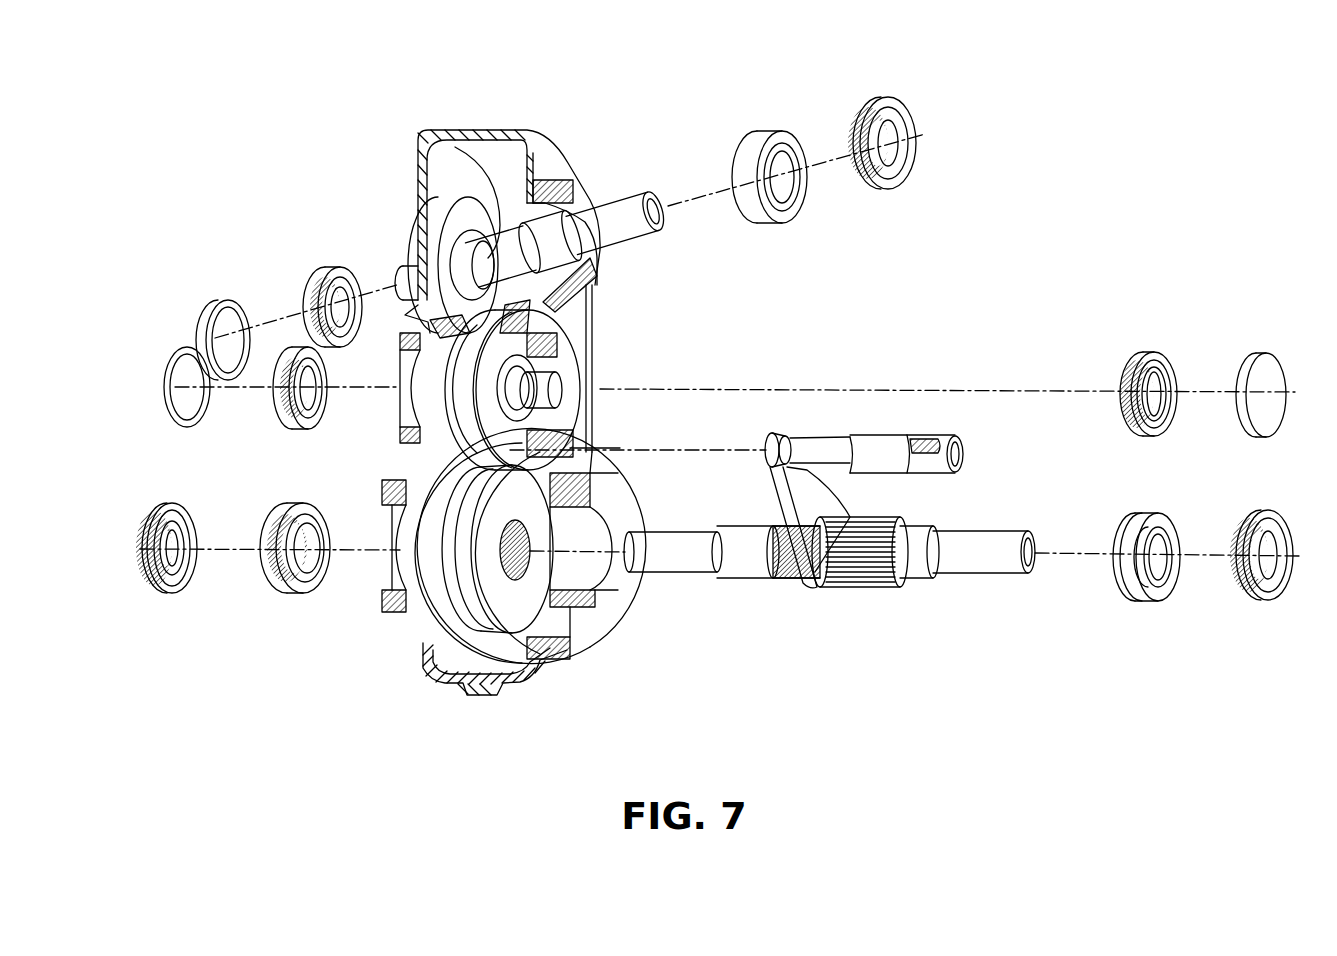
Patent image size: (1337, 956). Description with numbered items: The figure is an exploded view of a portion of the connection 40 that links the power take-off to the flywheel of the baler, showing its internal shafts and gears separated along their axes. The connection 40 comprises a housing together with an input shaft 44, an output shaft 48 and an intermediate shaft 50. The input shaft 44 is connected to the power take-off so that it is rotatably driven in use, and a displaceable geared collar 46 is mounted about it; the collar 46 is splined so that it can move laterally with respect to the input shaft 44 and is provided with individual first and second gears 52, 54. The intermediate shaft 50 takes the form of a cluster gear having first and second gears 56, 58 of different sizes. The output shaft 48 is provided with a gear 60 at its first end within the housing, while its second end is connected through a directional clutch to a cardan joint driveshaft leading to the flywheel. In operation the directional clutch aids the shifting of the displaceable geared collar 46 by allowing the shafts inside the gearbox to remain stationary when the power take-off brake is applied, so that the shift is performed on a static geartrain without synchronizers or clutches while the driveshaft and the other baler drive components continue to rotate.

The connection 40 is at (514, 116).
The input shaft 44 is at (678, 560).
The displaceable geared collar 46 is at (393, 645).
The output shaft 48 is at (616, 192).
The intermediate shaft 50 is at (556, 385).
The first gear 52 is at (416, 463).
The second gear 54 is at (517, 492).
The first gear 56 is at (445, 366).
The second gear 58 is at (512, 322).
The gear 60 is at (425, 220).